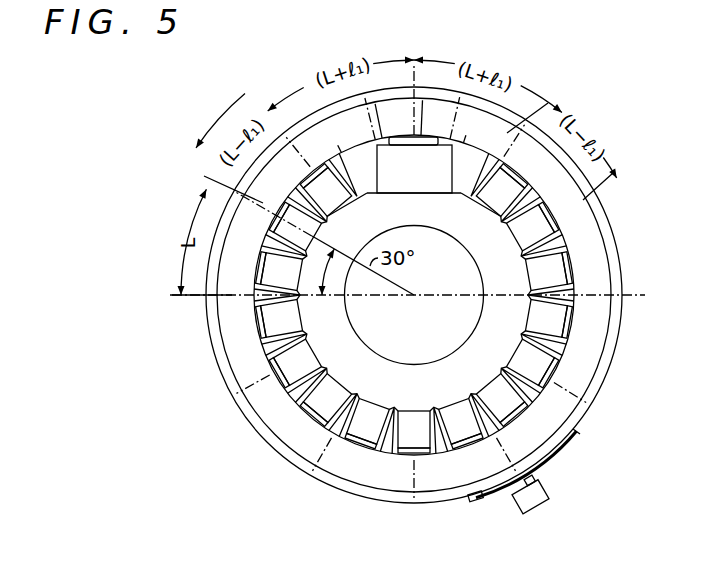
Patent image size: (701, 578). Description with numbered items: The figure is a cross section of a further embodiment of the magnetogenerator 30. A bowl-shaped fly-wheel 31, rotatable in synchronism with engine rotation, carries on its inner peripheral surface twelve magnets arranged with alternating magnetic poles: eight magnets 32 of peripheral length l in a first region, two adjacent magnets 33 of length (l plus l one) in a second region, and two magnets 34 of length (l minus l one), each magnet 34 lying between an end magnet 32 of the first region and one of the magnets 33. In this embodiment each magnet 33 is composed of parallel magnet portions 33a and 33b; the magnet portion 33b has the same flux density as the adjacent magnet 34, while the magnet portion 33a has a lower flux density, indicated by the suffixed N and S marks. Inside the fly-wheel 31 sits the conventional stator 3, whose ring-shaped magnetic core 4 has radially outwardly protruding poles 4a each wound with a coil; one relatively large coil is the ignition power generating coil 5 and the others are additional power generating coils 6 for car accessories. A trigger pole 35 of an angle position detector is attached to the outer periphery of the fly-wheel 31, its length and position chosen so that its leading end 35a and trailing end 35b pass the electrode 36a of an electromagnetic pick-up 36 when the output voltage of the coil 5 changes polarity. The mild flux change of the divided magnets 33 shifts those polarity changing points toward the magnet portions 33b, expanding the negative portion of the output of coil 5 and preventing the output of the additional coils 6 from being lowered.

The stator 3 is at (437, 452).
The magnetic core 4 is at (330, 408).
The poles 4a is at (568, 266).
The ignition power generating coil 5 is at (408, 173).
The additional power generating coils 6 is at (518, 233).
The magnetogenerator 30 is at (585, 112).
The fly-wheel 31 is at (607, 218).
The magnets 32 is at (230, 279).
The magnets 33 is at (322, 138).
The magnet portion 33a is at (377, 105).
The magnet portion 33b is at (336, 148).
The magnets 34 is at (225, 172).
The trigger pole 35 is at (553, 460).
The leading end 35a is at (573, 433).
The trailing end 35b is at (470, 507).
The electromagnetic pick-up 36 is at (526, 510).
The electrode 36a is at (545, 508).